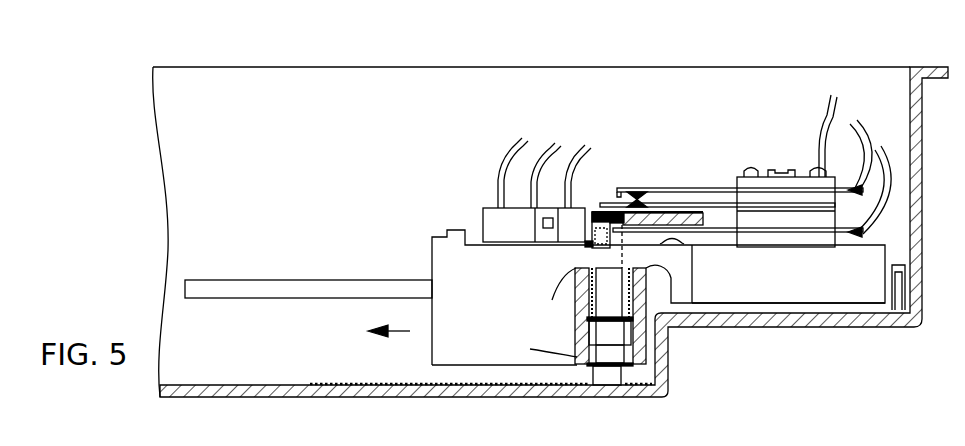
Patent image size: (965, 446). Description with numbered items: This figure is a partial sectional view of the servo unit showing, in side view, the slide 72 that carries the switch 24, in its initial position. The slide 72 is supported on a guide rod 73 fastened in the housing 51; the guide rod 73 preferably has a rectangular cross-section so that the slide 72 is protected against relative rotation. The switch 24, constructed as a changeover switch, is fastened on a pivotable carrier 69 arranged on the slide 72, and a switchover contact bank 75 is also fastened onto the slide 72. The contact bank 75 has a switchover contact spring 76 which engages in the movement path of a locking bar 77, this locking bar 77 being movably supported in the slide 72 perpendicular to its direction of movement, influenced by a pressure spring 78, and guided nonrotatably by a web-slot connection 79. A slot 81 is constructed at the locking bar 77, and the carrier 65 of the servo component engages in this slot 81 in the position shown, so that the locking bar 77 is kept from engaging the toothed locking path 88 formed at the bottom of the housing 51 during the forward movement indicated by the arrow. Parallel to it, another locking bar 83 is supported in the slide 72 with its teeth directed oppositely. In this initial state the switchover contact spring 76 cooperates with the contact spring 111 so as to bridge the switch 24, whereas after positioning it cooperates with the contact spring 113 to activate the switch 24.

The housing 51 is at (278, 146).
The guide rod 73 is at (226, 282).
The switch 24 is at (520, 218).
The carrier 69 is at (495, 240).
The switchover contact bank 75 is at (605, 181).
The switchover contact spring 76 is at (654, 190).
The contact spring 111 is at (681, 190).
The carrier 65 is at (697, 213).
The contact spring 113 is at (719, 248).
The slot 81 is at (600, 249).
The slide 72 is at (487, 307).
The locking bar 77 is at (574, 272).
The pressure spring 78 is at (576, 312).
The web-slot connection 79 is at (664, 343).
The locking path 88 is at (341, 385).
The locking bar 83 is at (604, 378).